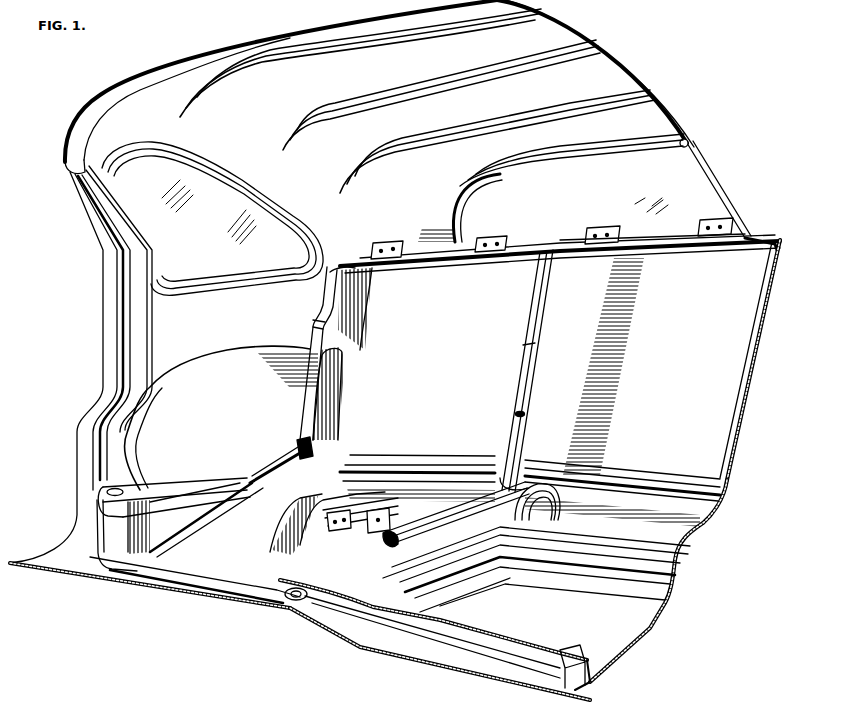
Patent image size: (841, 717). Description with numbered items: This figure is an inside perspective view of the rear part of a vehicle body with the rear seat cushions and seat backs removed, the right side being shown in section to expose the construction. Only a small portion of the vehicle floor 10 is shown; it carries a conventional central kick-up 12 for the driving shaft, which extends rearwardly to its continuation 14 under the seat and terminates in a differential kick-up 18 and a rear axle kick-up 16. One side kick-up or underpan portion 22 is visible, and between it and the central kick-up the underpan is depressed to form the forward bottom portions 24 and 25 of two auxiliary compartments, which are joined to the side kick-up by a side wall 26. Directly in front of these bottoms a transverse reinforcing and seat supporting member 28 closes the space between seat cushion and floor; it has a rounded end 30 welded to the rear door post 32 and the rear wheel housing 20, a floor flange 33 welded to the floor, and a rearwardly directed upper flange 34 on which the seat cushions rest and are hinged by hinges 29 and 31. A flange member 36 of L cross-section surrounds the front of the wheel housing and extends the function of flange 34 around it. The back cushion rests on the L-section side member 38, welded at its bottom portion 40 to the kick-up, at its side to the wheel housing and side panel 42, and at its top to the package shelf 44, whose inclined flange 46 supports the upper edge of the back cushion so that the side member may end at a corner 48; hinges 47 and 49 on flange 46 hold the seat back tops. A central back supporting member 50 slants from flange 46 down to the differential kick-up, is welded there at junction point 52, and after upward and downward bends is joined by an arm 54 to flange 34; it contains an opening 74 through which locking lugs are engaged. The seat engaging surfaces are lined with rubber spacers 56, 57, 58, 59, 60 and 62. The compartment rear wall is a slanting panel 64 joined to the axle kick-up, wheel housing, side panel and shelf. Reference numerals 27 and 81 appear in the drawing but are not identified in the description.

The vehicle floor 10 is at (570, 676).
The central kick-up 12 is at (294, 601).
The continuation of the central kick-up 14 is at (440, 556).
The rear axle kick-up 16 is at (675, 540).
The differential kick-up 18 is at (526, 472).
The rear wheel housing 20 is at (140, 417).
The underpan portion (side kick-up) 22 is at (190, 532).
The forward bottom portion 24 is at (615, 614).
The forward bottom portion 25 is at (225, 600).
The side wall 26 is at (180, 590).
The corner flange 27 is at (592, 684).
The transverse reinforcing and seat supporting member 28 is at (462, 636).
The hinge 29 is at (352, 514).
The rounded end 30 is at (105, 537).
The hinge 31 is at (380, 513).
The rear door post 32 is at (135, 340).
The floor flange 33 is at (568, 652).
The flange 34 is at (128, 508).
The flange member 36 is at (252, 479).
The side member 38 is at (332, 320).
The bottom portion 40 is at (310, 453).
The side panel 42 is at (160, 312).
The shelf 44 is at (770, 240).
The inclined flange 46 is at (755, 250).
The hinge 47 is at (417, 226).
The corner 48 is at (350, 276).
The hinge 49 is at (712, 218).
The back supporting member 50 is at (540, 386).
The welded junction point 52 is at (537, 505).
The arm 54 is at (458, 506).
The rubber spacer 56 is at (120, 490).
The rubber spacer 57 is at (170, 490).
The rubber spacer 58 is at (318, 395).
The rubber spacer 59 is at (355, 263).
The rubber spacer 60 is at (652, 242).
The rubber spacer 62 is at (440, 482).
The slanting panel 64 is at (715, 430).
The opening 74 is at (518, 412).
The door post edge 81 is at (535, 331).